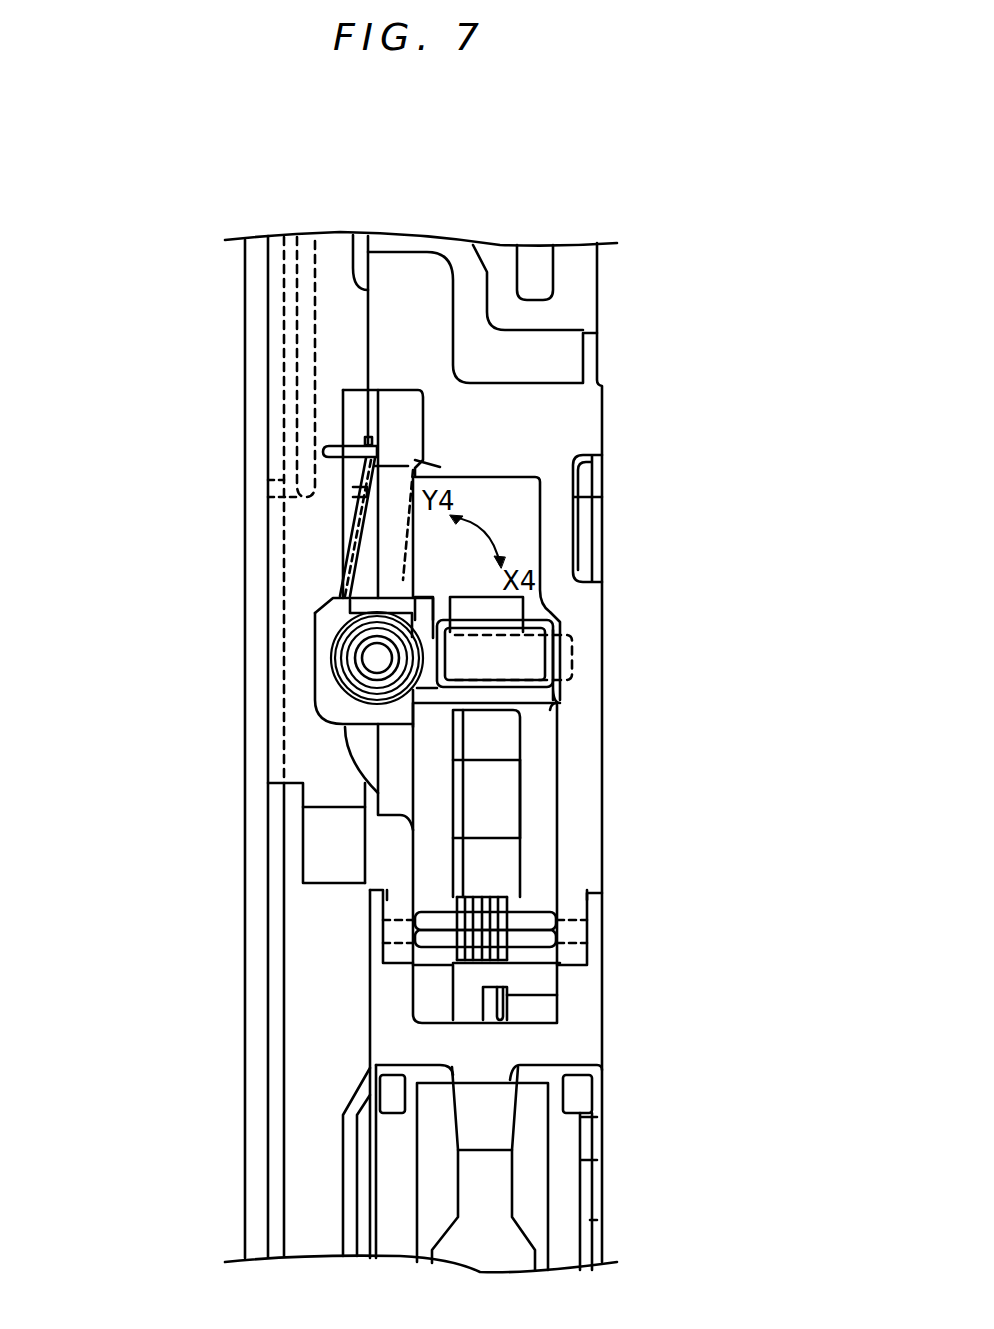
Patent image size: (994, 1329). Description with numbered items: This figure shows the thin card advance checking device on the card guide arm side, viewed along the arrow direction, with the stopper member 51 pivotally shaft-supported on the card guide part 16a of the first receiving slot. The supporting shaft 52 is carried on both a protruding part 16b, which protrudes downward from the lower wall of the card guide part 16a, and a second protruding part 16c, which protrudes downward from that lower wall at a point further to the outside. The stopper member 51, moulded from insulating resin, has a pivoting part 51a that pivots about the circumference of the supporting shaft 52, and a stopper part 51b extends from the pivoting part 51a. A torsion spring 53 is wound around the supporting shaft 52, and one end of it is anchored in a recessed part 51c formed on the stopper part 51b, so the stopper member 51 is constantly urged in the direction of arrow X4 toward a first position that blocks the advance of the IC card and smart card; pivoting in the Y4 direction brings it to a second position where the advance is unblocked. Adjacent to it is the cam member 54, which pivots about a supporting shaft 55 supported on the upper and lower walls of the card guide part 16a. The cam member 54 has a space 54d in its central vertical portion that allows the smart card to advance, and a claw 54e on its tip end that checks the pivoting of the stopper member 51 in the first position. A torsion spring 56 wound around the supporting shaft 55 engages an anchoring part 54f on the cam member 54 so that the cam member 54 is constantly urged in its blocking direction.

The card guide part 16a is at (393, 806).
The protruding part 16b is at (357, 747).
The protruding part 16c is at (323, 620).
The stopper member 51 is at (330, 640).
The pivoting part 51a is at (357, 690).
The stopper part 51b is at (530, 670).
The recessed part 51c is at (560, 630).
The supporting shaft 52 is at (367, 660).
The torsion spring 53 is at (343, 675).
The cam member 54 is at (565, 838).
The space 54d is at (500, 862).
The claw 54e is at (477, 620).
The anchoring part 54f is at (490, 752).
The supporting shaft 55 is at (537, 943).
The torsion spring 56 is at (470, 963).